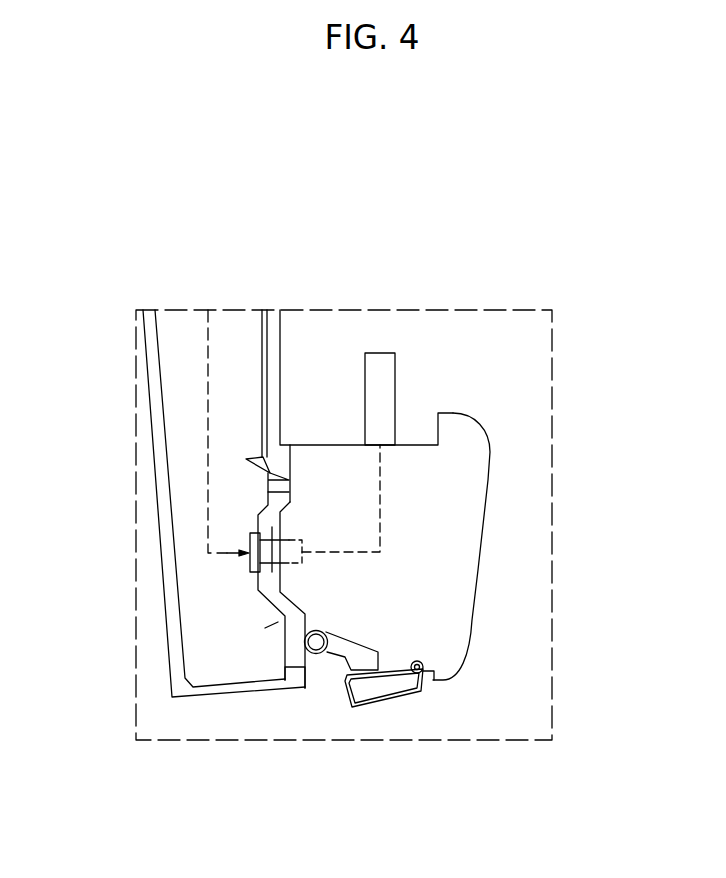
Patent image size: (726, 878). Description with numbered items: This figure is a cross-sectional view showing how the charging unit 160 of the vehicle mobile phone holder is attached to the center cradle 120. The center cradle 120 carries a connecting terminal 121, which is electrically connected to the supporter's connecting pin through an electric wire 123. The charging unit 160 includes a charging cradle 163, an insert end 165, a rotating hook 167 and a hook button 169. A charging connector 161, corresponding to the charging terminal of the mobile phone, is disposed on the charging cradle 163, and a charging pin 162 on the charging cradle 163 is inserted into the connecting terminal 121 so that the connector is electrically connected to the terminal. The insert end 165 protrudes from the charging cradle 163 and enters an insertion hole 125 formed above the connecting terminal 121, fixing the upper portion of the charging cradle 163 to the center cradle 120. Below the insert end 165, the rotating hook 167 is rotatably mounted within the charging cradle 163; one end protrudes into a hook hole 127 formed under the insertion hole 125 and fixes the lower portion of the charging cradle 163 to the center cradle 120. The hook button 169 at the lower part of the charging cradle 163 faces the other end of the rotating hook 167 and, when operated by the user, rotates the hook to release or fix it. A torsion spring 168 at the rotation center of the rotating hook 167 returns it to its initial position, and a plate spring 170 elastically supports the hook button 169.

The center cradle 120 is at (147, 345).
The connecting terminal 121 is at (267, 538).
The electric wire 123 is at (208, 357).
The insertion hole 125 is at (243, 493).
The hook hole 127 is at (280, 648).
The charging unit 160 is at (473, 367).
The charging connector 161 is at (378, 378).
The charging pin 162 is at (262, 597).
The charging cradle 163 is at (446, 569).
The insert end 165 is at (285, 472).
The rotating hook 167 is at (320, 654).
The torsion spring 168 is at (315, 690).
The hook button 169 is at (379, 690).
The plate spring 170 is at (428, 680).